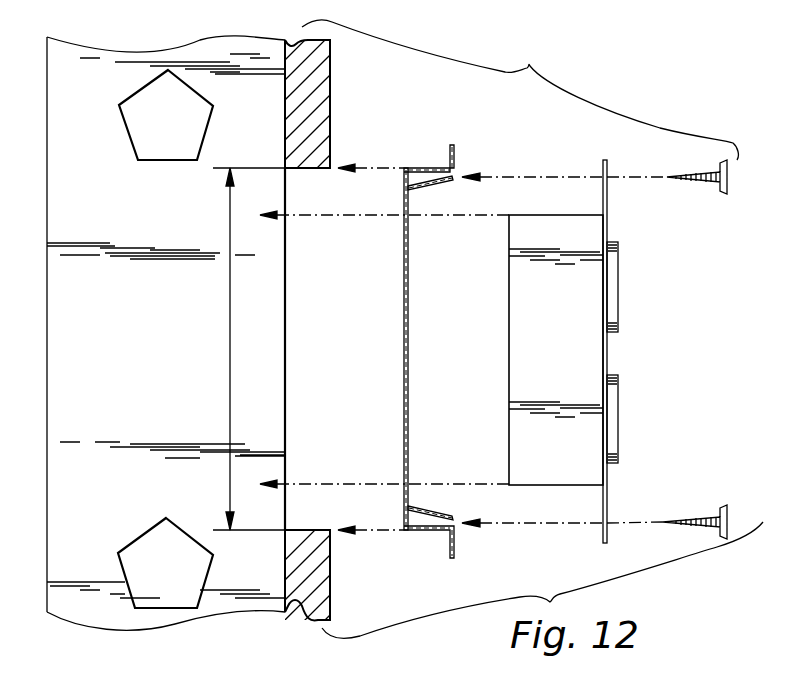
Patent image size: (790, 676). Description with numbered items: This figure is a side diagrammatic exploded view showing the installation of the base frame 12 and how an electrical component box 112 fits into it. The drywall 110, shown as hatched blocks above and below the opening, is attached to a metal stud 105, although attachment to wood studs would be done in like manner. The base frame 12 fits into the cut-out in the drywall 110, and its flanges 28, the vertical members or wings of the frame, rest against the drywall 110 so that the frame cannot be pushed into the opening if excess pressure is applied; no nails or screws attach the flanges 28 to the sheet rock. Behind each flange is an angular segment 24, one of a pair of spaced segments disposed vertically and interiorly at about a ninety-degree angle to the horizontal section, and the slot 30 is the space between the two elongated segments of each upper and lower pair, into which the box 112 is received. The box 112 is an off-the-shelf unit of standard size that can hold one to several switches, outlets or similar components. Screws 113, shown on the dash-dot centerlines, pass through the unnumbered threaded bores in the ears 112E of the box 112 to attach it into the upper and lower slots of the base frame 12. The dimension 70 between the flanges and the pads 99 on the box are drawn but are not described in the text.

The base frame 12 is at (387, 294).
The angular segment 24 is at (425, 510).
The flange 28 is at (452, 150).
The slot 30 is at (455, 180).
The spacing dimension 70 is at (230, 391).
The cushion pads 99 is at (618, 278).
The metal stud 105 is at (160, 360).
The drywall 110 is at (330, 88).
The box 112 is at (563, 377).
The ear 112E is at (601, 533).
The screw 113 is at (707, 183).